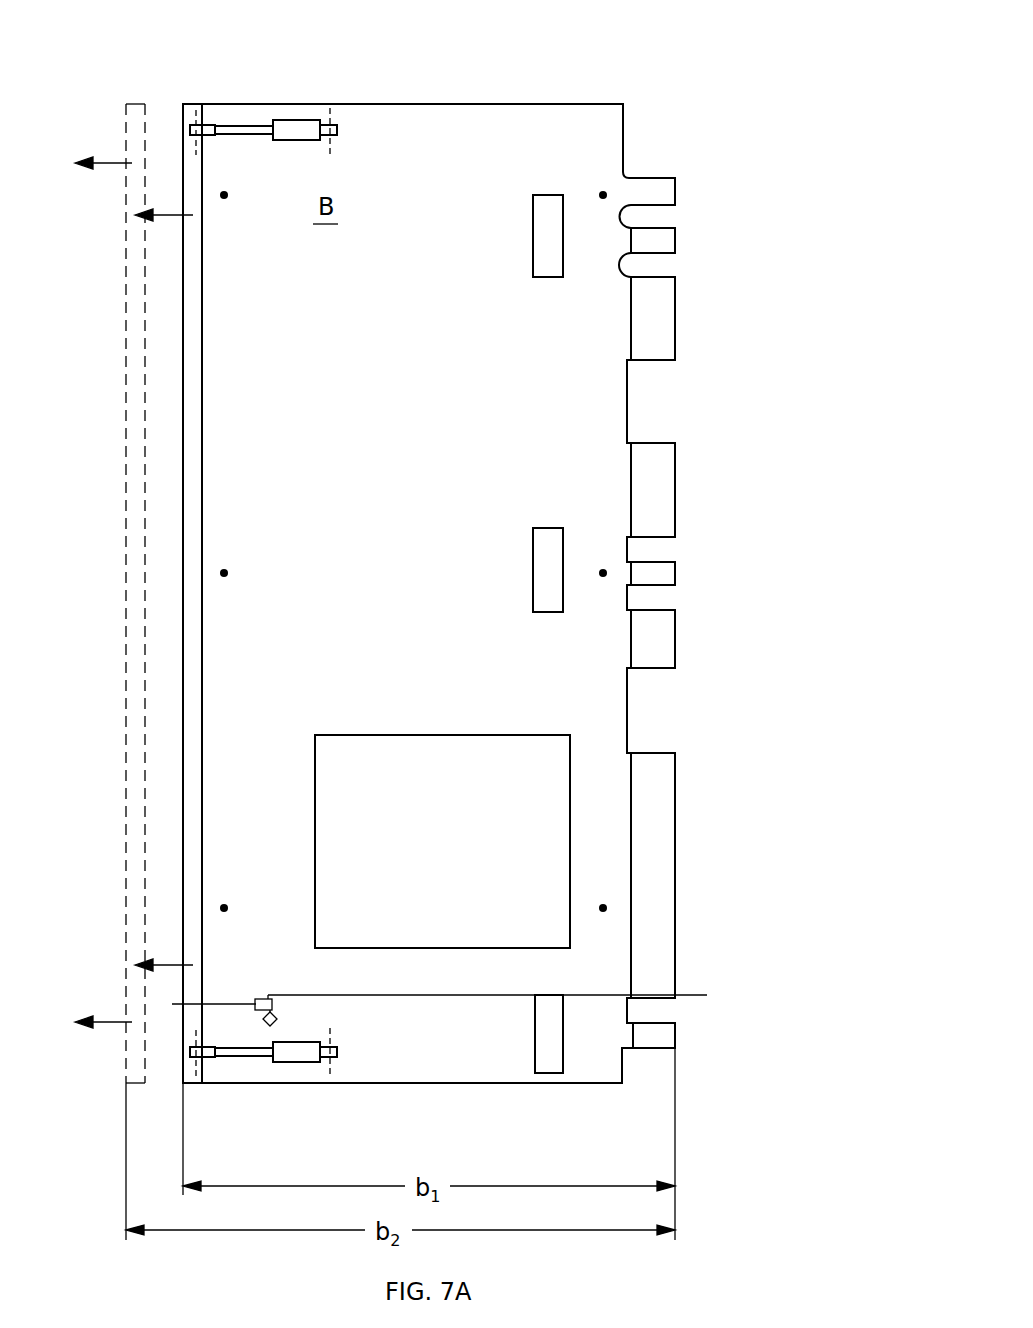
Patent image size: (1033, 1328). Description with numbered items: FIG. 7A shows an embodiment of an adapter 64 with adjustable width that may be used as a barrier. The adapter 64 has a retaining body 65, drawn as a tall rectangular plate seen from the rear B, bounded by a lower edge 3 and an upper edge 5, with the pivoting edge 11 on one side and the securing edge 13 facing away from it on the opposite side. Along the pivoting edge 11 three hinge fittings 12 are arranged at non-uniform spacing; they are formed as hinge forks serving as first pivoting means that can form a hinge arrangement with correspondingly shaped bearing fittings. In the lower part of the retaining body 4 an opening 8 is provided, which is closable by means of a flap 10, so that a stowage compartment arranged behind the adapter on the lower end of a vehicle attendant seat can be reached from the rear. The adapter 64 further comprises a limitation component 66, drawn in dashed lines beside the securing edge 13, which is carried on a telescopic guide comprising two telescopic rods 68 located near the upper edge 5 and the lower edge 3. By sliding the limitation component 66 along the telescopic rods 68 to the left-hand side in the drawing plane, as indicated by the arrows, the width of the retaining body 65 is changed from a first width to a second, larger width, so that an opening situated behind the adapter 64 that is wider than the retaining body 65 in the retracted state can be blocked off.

The lower edge 3 is at (482, 1092).
The retaining body 4 is at (312, 1083).
The upper edge 5 is at (438, 96).
The opening 8 is at (420, 970).
The flap 10 is at (444, 838).
The pivoting edge 11 is at (610, 402).
The hinge fitting 12 is at (710, 232).
The securing edge 13 is at (212, 477).
The adapter 64 is at (546, 54).
The retaining body 65 is at (605, 718).
The limitation component 66 is at (190, 402).
The telescopic rod 68 is at (302, 127).